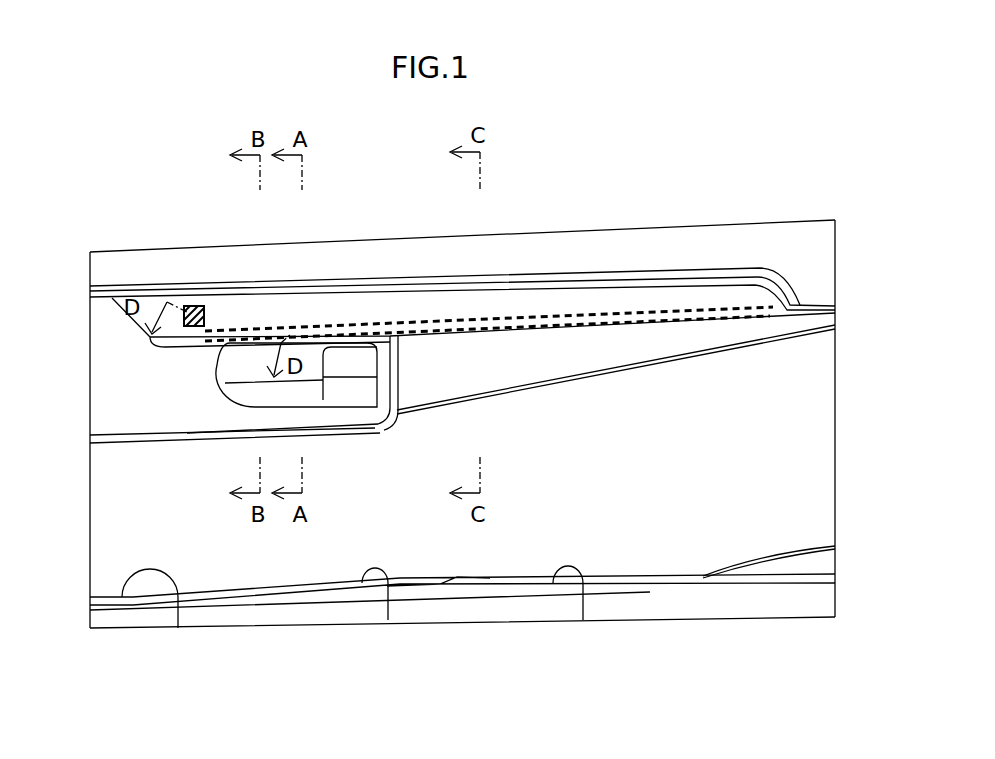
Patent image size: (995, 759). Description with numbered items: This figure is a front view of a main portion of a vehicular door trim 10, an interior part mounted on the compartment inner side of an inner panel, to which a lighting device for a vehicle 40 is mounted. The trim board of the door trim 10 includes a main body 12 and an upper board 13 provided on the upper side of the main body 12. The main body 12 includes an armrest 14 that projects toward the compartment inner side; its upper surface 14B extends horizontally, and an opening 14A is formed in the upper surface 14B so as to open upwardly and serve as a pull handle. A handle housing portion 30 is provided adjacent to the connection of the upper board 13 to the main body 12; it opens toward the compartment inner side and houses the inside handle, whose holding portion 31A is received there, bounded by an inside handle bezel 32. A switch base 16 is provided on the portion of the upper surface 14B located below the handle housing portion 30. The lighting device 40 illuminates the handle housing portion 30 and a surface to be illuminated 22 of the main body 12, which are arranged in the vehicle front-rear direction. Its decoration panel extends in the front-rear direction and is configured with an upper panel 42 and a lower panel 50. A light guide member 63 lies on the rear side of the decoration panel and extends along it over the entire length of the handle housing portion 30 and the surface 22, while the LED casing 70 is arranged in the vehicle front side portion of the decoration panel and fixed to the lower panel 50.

The vehicular door trim 10 is at (124, 206).
The main body 12 is at (663, 540).
The upper board 13 is at (755, 245).
The armrest 14 is at (285, 613).
The opening 14A is at (583, 620).
The upper surface 14B is at (178, 628).
The switch base 16 is at (388, 620).
The surface to be illuminated 22 is at (730, 332).
The handle housing portion 30 is at (236, 379).
The holding portion 31A is at (267, 397).
The inside handle bezel 32 is at (268, 417).
The lighting device for a vehicle 40 is at (122, 348).
The upper panel 42 is at (523, 302).
The lower panel 50 is at (612, 315).
The light guide member 63 is at (378, 325).
The casing 70 is at (190, 303).